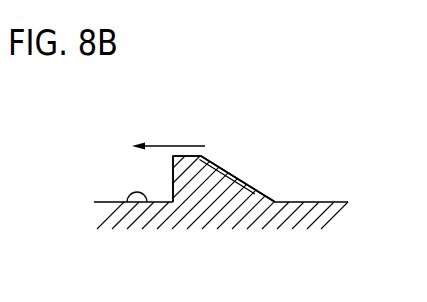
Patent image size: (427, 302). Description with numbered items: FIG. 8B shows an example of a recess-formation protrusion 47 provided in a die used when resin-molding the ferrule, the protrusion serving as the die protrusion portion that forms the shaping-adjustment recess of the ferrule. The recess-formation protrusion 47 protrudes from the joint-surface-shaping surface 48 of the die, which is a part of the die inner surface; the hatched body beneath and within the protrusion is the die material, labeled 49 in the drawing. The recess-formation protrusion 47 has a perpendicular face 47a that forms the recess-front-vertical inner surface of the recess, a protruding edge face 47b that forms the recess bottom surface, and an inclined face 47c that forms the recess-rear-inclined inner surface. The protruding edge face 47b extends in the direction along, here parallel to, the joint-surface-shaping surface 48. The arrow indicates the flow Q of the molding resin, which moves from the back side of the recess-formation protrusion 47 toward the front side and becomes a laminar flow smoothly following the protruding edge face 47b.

The recess-formation protrusion 47 is at (171, 155).
The perpendicular face 47a is at (172, 193).
The protruding edge face 47b is at (190, 156).
The inclined face 47c is at (255, 179).
The joint-surface-shaping surface 48 is at (127, 203).
The base substrate 49 is at (344, 221).
The flow of the molding resin Q is at (203, 156).